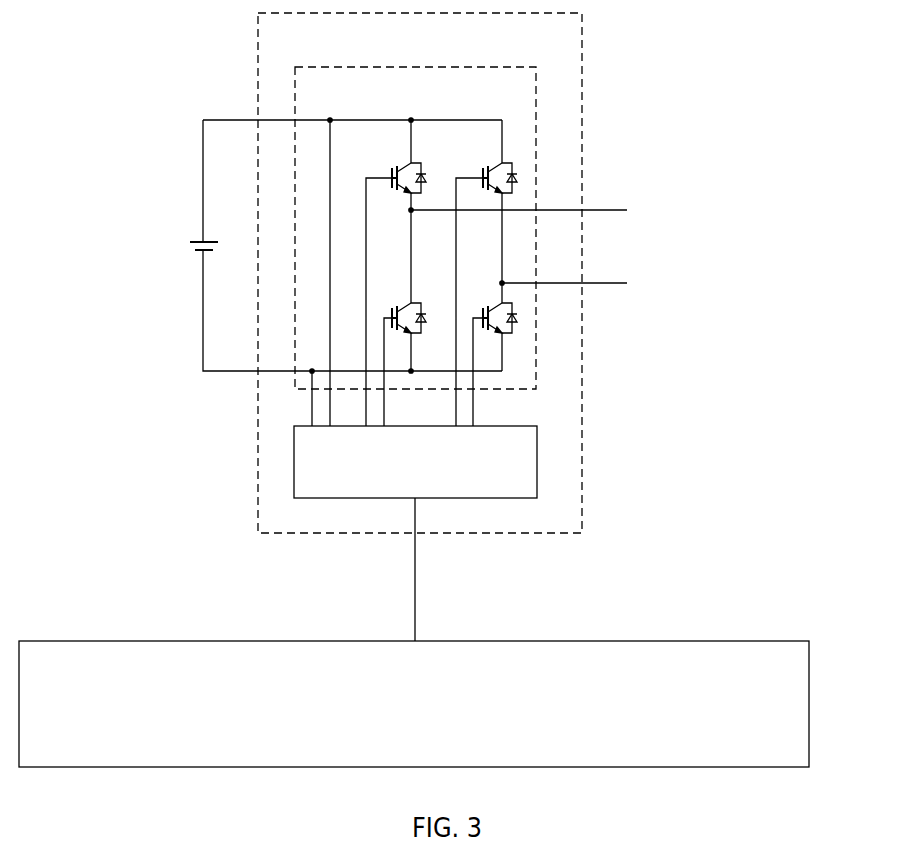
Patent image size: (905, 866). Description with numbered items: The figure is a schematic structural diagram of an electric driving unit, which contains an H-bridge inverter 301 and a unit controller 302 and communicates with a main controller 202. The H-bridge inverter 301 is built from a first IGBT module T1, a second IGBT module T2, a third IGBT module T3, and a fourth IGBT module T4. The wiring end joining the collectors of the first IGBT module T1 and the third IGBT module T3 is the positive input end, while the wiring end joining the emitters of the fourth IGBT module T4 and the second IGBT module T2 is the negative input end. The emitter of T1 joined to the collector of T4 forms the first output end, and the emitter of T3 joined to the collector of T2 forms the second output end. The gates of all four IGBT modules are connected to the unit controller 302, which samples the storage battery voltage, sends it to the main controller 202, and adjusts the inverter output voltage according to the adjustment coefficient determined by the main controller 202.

The H-bridge inverter 301 is at (536, 67).
The unit controller 302 is at (537, 426).
The main controller 202 is at (809, 641).
The first IGBT module T1 is at (399, 169).
The second IGBT module T2 is at (489, 311).
The third IGBT module T3 is at (489, 169).
The fourth IGBT module T4 is at (399, 311).